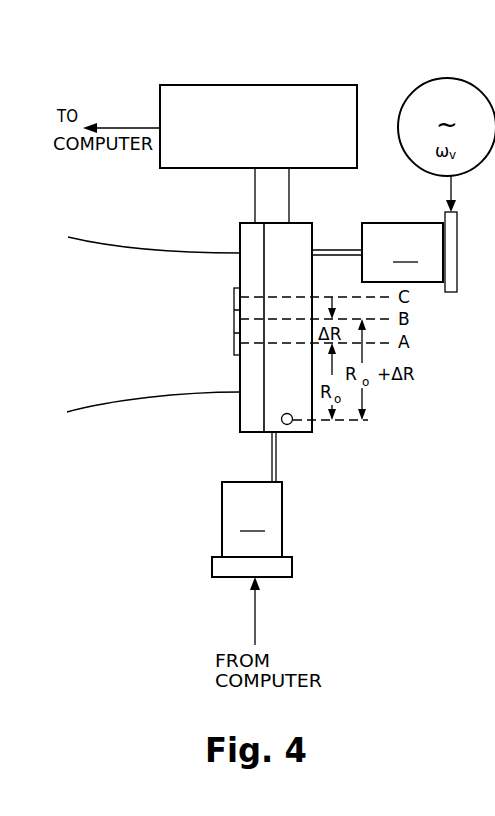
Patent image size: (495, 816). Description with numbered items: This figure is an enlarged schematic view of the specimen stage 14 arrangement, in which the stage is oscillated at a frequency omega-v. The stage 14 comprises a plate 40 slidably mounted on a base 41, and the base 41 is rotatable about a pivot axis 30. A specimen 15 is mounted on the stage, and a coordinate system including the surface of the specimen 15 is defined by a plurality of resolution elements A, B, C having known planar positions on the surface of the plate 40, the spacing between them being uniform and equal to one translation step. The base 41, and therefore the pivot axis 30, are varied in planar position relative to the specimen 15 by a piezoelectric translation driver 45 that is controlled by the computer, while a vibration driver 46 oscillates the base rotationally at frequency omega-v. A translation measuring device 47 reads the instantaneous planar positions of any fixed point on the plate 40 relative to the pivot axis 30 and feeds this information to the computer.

The specimen stage 14 is at (228, 411).
The specimen 15 is at (233, 318).
The pivot axis 30 is at (290, 425).
The plate 40 is at (243, 415).
The base 41 is at (296, 382).
The piezoelectric translation driver 45 is at (228, 538).
The vibration driver 46 is at (428, 243).
The translation measuring device 47 is at (270, 95).